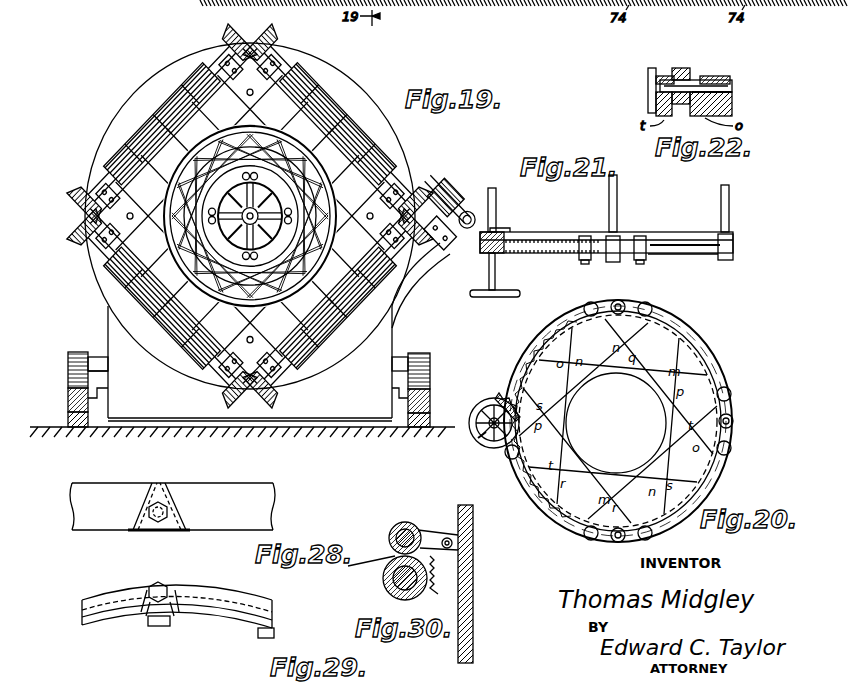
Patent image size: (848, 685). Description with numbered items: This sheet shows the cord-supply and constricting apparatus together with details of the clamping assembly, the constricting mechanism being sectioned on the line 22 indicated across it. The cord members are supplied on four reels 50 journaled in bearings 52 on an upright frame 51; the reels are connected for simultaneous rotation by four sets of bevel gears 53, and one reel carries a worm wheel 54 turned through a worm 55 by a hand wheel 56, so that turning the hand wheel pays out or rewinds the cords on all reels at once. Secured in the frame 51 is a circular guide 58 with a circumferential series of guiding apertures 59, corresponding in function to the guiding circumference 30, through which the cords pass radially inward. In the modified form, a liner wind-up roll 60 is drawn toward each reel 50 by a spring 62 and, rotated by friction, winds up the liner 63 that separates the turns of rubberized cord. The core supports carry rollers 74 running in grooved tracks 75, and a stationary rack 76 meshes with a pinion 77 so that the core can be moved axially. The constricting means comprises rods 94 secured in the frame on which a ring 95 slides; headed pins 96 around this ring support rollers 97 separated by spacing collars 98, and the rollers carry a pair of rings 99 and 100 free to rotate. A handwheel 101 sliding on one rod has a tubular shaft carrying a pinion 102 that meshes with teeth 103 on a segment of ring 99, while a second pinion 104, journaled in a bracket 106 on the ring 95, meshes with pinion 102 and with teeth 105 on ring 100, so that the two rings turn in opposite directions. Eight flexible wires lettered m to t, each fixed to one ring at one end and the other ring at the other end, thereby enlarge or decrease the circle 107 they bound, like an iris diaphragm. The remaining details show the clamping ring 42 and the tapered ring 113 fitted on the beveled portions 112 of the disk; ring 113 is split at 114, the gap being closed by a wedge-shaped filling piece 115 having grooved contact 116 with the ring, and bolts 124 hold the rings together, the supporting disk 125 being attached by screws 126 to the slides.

In FIG. 20, the screw 22 is at (746, 396).
In FIG. 19, the guiding circumference 30 is at (388, 95).
In FIG. 28, the clamping ring 42 is at (218, 520).
In FIG. 29, the clamping ring 42 is at (210, 596).
In FIG. 19, the reel 50 is at (148, 112).
In FIG. 30, the reel 50 is at (384, 582).
In FIG. 19, the frame 51 is at (152, 76).
In FIG. 19, the bearing 52 is at (207, 55).
In FIG. 19, the bevel gears 53 is at (250, 47).
In FIG. 19, the worm wheel 54 is at (459, 193).
In FIG. 19, the worm 55 is at (458, 248).
In FIG. 19, the hand wheel 56 is at (444, 221).
In FIG. 19, the circular guide 58 is at (284, 144).
In FIG. 19, the guiding apertures 59 is at (268, 136).
In FIG. 30, the liner wind-up roll 60 is at (398, 524).
In FIG. 30, the spring 62 is at (440, 566).
In FIG. 30, the liner 63 is at (390, 534).
In FIG. 19, the rollers 74 is at (64, 424).
In FIG. 19, the grooved tracks 75 is at (62, 398).
In FIG. 19, the stationary rack 76 is at (68, 366).
In FIG. 19, the pinion 77 is at (86, 354).
In FIG. 19, the rods 94 is at (262, 88).
In FIG. 21, the rods 94 is at (496, 196).
In FIG. 20, the rods 94 is at (622, 304).
In FIG. 21, the ring 95 is at (682, 232).
In FIG. 22, the ring 95 is at (732, 92).
In FIG. 20, the ring 95 is at (688, 332).
In FIG. 22, the headed pins 96 is at (650, 80).
In FIG. 20, the headed pins 96 is at (584, 307).
In FIG. 22, the rollers 97 is at (662, 74).
In FIG. 21, the spacing collars 98 is at (644, 236).
In FIG. 22, the spacing collars 98 is at (680, 66).
In FIG. 21, the ring 99 is at (676, 256).
In FIG. 22, the ring 99 is at (656, 106).
In FIG. 20, the ring 99 is at (708, 488).
In FIG. 21, the ring 100 is at (716, 226).
In FIG. 22, the ring 100 is at (732, 110).
In FIG. 21, the handwheel 101 is at (502, 297).
In FIG. 20, the handwheel 101 is at (480, 439).
In FIG. 21, the pinion 102 is at (488, 254).
In FIG. 20, the pinion 102 is at (471, 423).
In FIG. 21, the teeth 103 is at (526, 254).
In FIG. 20, the teeth 103 is at (538, 510).
In FIG. 21, the second pinion 104 is at (508, 226).
In FIG. 20, the second pinion 104 is at (492, 394).
In FIG. 21, the teeth 105 is at (550, 230).
In FIG. 21, the bracket 106 is at (502, 224).
In FIG. 20, the circle 107 is at (570, 434).
In FIG. 29, the beveled portions 112 is at (130, 618).
In FIG. 29, the ring 113 is at (216, 622).
In FIG. 28, the split 114 is at (142, 500).
In FIG. 29, the split 114 is at (142, 590).
In FIG. 28, the wedge-shaped filling piece 115 is at (160, 484).
In FIG. 29, the wedge-shaped filling piece 115 is at (174, 620).
In FIG. 29, the grooved contact 116 is at (182, 584).
In FIG. 28, the bolts 124 is at (150, 532).
In FIG. 29, the bolts 124 is at (150, 628).
In FIG. 19, the disk 125 is at (288, 208).
In FIG. 19, the screws 126 is at (256, 230).